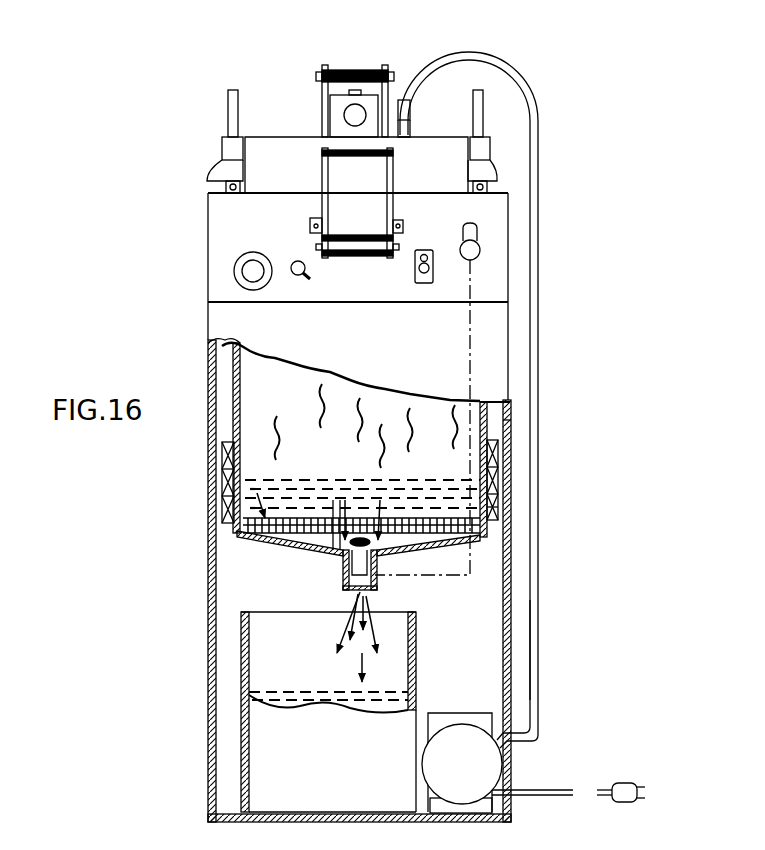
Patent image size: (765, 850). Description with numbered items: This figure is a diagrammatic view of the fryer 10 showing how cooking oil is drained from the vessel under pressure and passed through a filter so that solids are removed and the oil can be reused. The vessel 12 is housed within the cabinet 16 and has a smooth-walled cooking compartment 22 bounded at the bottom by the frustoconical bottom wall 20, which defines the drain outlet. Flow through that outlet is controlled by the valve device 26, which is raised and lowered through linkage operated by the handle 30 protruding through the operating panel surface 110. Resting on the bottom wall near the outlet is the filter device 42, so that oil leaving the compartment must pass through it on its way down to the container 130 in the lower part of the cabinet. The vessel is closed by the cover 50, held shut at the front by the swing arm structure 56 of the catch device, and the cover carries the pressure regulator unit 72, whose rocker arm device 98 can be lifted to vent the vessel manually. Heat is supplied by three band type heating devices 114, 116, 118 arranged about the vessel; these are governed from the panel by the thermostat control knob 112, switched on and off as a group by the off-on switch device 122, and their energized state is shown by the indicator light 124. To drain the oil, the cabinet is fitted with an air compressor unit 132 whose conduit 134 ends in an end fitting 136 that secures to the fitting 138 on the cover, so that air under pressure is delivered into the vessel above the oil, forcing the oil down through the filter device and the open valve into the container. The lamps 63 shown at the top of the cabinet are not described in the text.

The fryer 10 is at (558, 72).
The vessel 12 is at (233, 425).
The cabinet 16 is at (515, 645).
The bottom wall 20 is at (292, 547).
The cooking compartment 22 is at (255, 383).
The valve device 26 is at (400, 548).
The handle 30 is at (480, 250).
The filter device 42 is at (236, 510).
The cover 50 is at (288, 137).
The swing arm structure 56 is at (323, 205).
The lamp 63 is at (220, 150).
The pressure regulator unit 72 is at (350, 77).
The rocker arm device 98 is at (322, 90).
The operating panel surface 110 is at (210, 232).
The thermostat control knob 112 is at (232, 273).
The band type heating device 114 is at (510, 452).
The band type heating device 116 is at (498, 487).
The band type heating device 118 is at (498, 512).
The off-on switch device 122 is at (424, 286).
The indicator light 124 is at (312, 279).
The container 130 is at (260, 750).
The air compressor unit 132 is at (483, 768).
The conduit 134 is at (514, 400).
The end fitting 136 is at (412, 127).
The fitting 138 is at (410, 137).